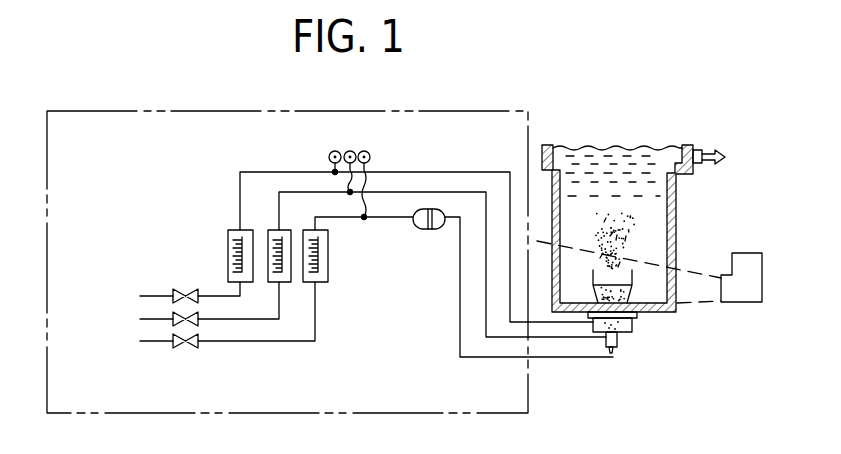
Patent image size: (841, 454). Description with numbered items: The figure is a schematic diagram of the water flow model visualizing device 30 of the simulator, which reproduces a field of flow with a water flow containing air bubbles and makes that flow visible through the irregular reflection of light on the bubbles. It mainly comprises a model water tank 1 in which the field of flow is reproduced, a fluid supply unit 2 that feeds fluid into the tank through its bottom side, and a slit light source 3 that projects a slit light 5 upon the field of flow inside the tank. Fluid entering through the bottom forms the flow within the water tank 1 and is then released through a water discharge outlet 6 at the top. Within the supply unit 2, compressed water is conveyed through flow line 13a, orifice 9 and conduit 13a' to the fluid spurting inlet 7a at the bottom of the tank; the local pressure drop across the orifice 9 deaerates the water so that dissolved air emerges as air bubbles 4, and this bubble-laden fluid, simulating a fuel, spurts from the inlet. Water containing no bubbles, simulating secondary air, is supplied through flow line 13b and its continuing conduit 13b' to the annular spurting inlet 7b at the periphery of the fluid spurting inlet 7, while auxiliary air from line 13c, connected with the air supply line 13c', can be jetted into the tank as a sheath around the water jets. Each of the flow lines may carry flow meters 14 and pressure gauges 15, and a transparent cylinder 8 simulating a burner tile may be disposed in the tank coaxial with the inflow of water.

The model water tank 1 is at (676, 197).
The fluid supply unit 2 is at (248, 118).
The slit light source 3 is at (751, 262).
The air bubbles 4 is at (638, 224).
The slit light 5 is at (691, 284).
The water discharge outlet 6 is at (697, 147).
The fluid spurting inlet 7 is at (637, 326).
The fluid spurting inlet 7a is at (616, 350).
The annular spurting inlet 7b is at (620, 341).
The transparent cylinder 8 is at (592, 282).
The orifice 9 is at (427, 230).
The flow line 13a is at (207, 323).
The flow line 13b is at (182, 307).
The auxiliary air line 13c is at (170, 287).
The conduit 13a' is at (464, 303).
The supply line 13b' is at (446, 297).
The air supply line 13c' is at (416, 231).
The flow meters 14 is at (212, 243).
The pressure gauges 15 is at (366, 146).
The visualizing device 30 is at (634, 129).